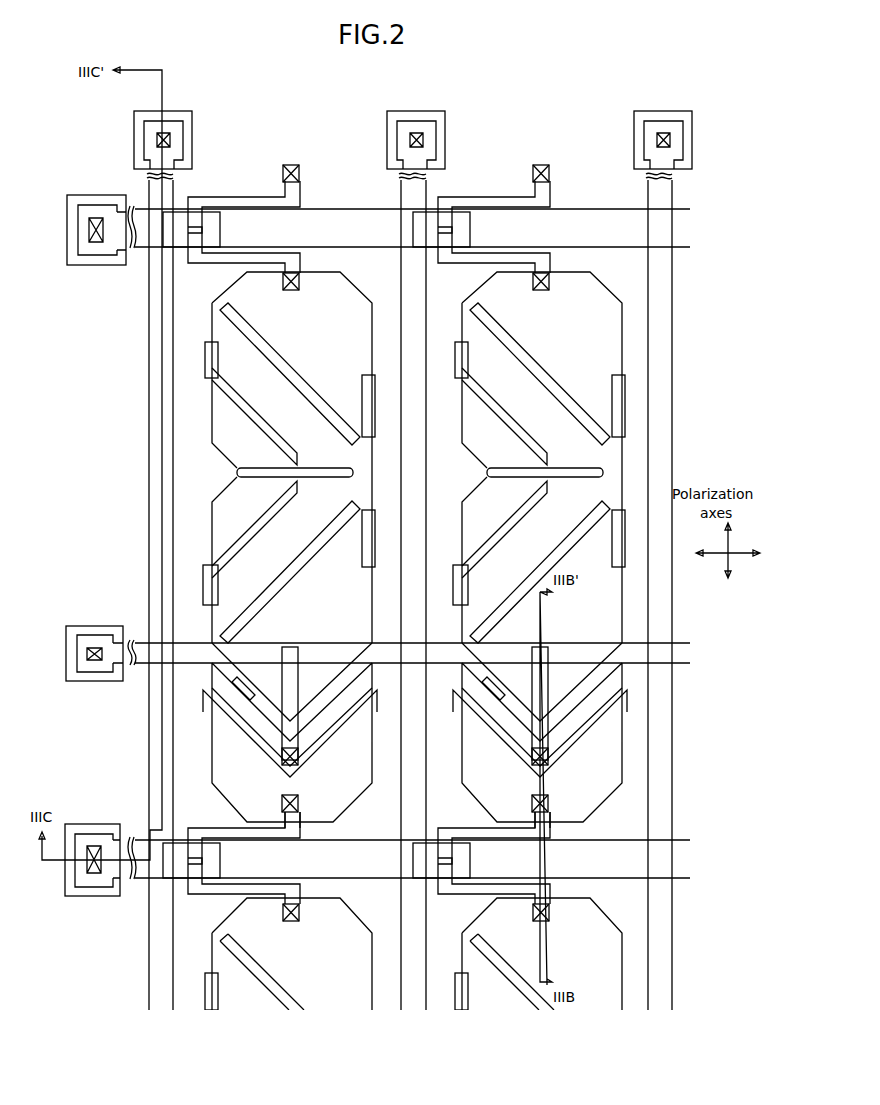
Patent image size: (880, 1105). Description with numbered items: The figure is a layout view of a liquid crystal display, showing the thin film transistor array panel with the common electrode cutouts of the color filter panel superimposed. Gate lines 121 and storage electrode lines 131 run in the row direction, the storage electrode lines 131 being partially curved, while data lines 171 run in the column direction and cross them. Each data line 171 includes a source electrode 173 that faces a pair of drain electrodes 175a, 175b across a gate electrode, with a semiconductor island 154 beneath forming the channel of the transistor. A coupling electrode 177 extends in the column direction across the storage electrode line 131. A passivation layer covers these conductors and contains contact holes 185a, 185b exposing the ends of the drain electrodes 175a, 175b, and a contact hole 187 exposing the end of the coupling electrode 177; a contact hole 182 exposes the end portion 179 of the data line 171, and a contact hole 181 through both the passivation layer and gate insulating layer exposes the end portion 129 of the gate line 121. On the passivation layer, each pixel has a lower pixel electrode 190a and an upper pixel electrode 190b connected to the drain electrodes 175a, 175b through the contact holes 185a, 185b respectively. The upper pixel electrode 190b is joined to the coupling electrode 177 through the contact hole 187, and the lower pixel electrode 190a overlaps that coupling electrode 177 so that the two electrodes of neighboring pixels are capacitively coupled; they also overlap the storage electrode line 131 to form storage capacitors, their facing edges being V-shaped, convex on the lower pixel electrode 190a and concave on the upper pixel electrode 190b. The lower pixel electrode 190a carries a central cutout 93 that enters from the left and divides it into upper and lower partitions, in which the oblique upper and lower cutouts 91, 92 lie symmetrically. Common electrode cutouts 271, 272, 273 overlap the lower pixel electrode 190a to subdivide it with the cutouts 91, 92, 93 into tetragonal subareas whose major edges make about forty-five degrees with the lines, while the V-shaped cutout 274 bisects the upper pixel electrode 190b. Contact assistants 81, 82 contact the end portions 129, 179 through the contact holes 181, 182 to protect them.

The data line 171 is at (149, 440).
The gate line 121 is at (683, 880).
The storage electrode line 131 is at (590, 640).
The contact assistant 81 is at (76, 896).
The end portion of gate line 129 is at (97, 834).
The contact hole 181 is at (97, 873).
The contact assistant 82 is at (192, 122).
The end portion of data line 179 is at (172, 121).
The contact hole 182 is at (172, 138).
The semiconductor island 154 is at (420, 844).
The source electrode 173 is at (407, 858).
The drain electrode 175a is at (458, 263).
The drain electrode 175b is at (462, 827).
The contact hole 185a is at (553, 913).
The contact hole 185b is at (553, 804).
The contact hole 187 is at (553, 757).
The lower pixel electrode 190a is at (620, 442).
The upper pixel electrode 190b is at (620, 688).
The upper cutout 91 is at (575, 405).
The lower cutout 92 is at (612, 545).
The central cutout 93 is at (472, 520).
The cutout 271 is at (590, 334).
The cutout 272 is at (475, 402).
The cutout 273 is at (615, 580).
The cutout 274 is at (600, 730).
The coupling electrode 177 is at (555, 650).